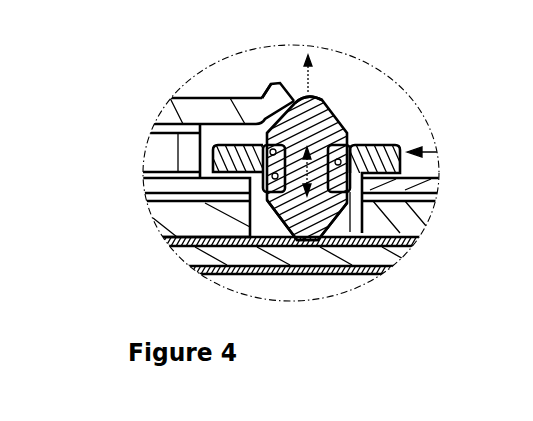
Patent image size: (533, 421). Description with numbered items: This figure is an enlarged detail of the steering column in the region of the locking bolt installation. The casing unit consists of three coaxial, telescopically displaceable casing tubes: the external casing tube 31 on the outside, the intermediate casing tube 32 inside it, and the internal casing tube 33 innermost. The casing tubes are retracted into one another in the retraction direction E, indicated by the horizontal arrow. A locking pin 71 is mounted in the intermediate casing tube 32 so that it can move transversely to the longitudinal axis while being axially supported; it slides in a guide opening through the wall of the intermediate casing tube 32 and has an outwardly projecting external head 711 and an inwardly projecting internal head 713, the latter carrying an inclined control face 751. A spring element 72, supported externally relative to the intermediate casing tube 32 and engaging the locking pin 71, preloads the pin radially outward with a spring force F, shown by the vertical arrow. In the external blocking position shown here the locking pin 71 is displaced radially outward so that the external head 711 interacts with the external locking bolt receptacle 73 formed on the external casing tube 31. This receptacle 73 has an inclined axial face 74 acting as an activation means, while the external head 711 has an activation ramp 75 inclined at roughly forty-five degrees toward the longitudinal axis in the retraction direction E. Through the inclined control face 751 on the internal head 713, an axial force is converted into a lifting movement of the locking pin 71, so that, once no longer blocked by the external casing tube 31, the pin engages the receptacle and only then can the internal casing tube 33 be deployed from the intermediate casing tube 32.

The external casing tube 31 is at (172, 117).
The intermediate casing tube 32 is at (413, 187).
The internal casing tube 33 is at (367, 247).
The locking pin 71 is at (322, 138).
The external head 711 is at (322, 112).
The internal head 713 is at (302, 208).
The spring element 72 is at (262, 175).
The external locking bolt receptacle 73 is at (276, 88).
The inclined axial face 74 is at (285, 103).
The activation ramp 75 is at (270, 134).
The inclined control face 751 is at (237, 239).
The spring force F is at (311, 82).
The retraction direction E is at (438, 153).